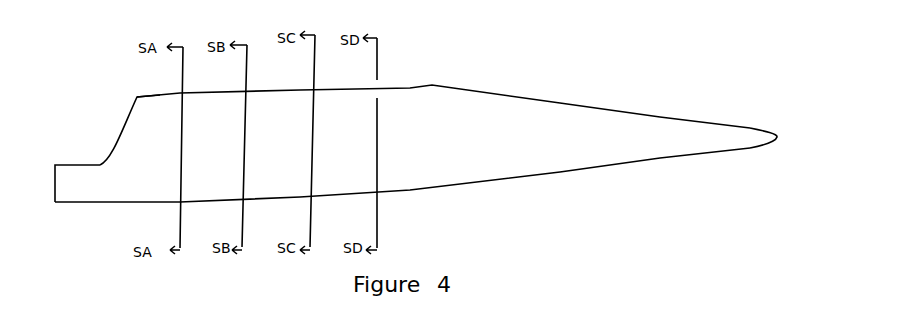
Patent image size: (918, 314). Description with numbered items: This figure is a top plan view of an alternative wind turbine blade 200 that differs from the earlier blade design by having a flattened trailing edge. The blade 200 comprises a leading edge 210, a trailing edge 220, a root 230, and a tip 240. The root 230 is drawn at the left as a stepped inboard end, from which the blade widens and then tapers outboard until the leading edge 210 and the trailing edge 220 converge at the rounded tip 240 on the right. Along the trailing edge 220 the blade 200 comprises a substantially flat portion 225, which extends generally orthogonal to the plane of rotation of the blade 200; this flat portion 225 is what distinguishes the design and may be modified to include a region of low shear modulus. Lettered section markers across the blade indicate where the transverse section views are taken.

The blade 200 is at (427, 143).
The leading edge 210 is at (475, 188).
The trailing edge 220 is at (485, 92).
The substantially flat portion 225 is at (165, 95).
The root 230 is at (62, 190).
The tip 240 is at (773, 128).